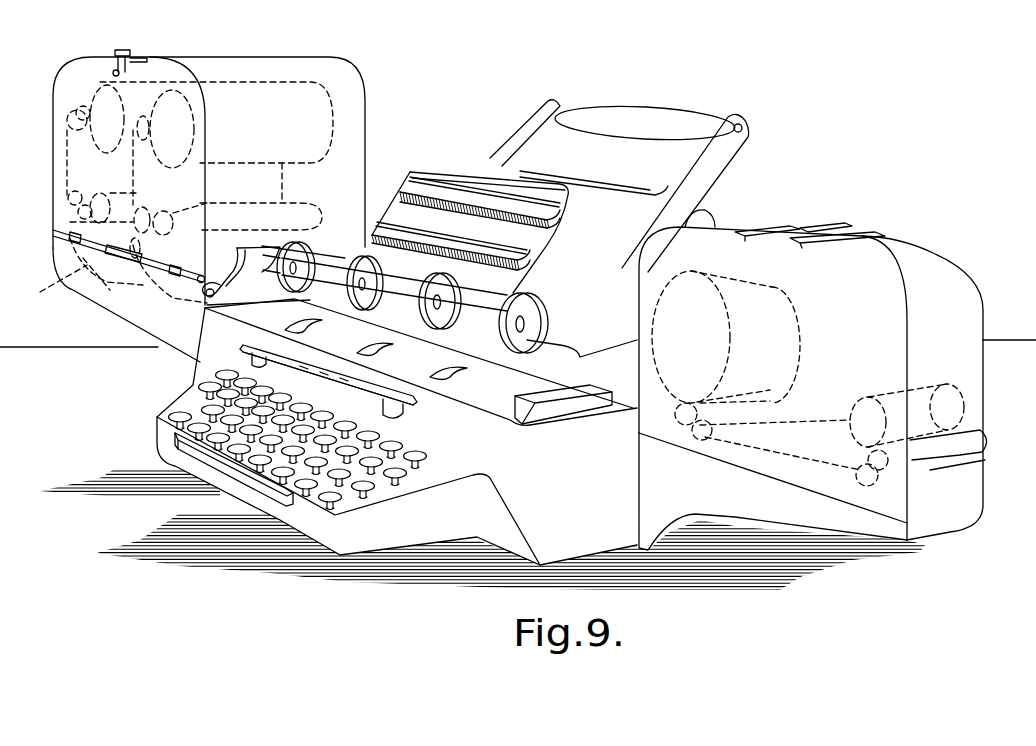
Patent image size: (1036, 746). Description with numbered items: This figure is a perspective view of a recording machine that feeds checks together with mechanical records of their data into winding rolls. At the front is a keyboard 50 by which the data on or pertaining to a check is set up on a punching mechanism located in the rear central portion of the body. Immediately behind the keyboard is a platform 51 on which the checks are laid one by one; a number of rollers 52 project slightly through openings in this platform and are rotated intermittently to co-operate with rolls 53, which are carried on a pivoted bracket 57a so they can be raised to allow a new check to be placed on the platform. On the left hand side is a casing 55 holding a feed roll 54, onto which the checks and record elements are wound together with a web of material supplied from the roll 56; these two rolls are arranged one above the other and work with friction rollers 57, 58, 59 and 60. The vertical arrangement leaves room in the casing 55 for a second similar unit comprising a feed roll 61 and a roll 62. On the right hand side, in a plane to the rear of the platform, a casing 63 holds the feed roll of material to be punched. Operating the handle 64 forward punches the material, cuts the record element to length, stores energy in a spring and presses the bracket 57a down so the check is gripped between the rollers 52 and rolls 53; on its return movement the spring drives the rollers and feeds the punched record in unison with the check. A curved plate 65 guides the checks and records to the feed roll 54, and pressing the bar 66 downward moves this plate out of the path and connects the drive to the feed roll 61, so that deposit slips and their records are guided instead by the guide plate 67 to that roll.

The keyboard 50 is at (163, 430).
The platform 51 is at (477, 402).
The rollers 52 is at (296, 325).
The rolls 53 is at (427, 283).
The feed roll 54 is at (168, 218).
The casing 55 is at (224, 70).
The roll 56 is at (182, 127).
The friction roller 57 is at (157, 242).
The pivoted bracket 57a is at (330, 288).
The friction roller 58 is at (150, 118).
The friction roller 59 is at (147, 213).
The friction roller 60 is at (136, 148).
The feed roll 61 is at (68, 215).
The roll 62 is at (90, 100).
The casing 63 is at (945, 273).
The handle 64 is at (625, 110).
The curved plate 65 is at (150, 273).
The bar 66 is at (417, 405).
The guide plate 67 is at (75, 263).